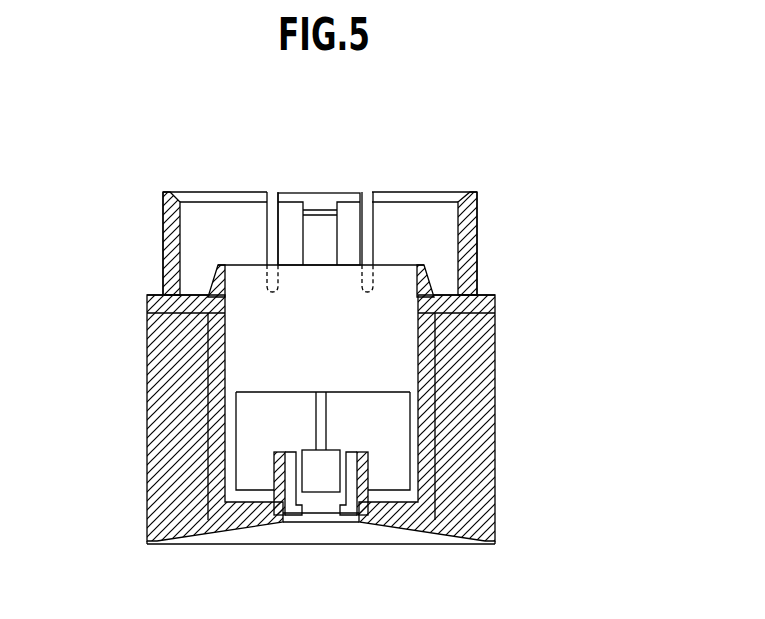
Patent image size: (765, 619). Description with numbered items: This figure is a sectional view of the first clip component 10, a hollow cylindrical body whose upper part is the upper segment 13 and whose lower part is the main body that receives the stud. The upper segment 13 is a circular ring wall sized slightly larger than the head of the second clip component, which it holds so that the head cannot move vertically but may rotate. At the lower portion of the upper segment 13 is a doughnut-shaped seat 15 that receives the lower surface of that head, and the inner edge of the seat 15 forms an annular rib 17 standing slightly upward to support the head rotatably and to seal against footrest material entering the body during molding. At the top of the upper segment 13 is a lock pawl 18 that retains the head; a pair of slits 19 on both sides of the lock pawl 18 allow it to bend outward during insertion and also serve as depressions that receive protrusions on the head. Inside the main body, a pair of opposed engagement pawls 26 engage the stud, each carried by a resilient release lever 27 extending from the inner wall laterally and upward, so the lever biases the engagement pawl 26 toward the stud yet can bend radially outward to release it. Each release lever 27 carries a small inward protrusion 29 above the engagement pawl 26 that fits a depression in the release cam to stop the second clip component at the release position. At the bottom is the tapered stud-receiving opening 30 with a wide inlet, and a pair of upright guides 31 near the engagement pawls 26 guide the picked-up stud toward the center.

The first clip component 10 is at (486, 190).
The upper segment 13 is at (163, 238).
The seat 15 is at (450, 290).
The annular rib 17 is at (223, 263).
The lock pawl 18 is at (319, 200).
The slits 19 is at (273, 193).
The engagement pawls 26 is at (320, 468).
The release lever 27 is at (380, 418).
The protrusion 29 is at (320, 392).
The stud-receiving opening 30 is at (362, 535).
The upright guides 31 is at (349, 493).